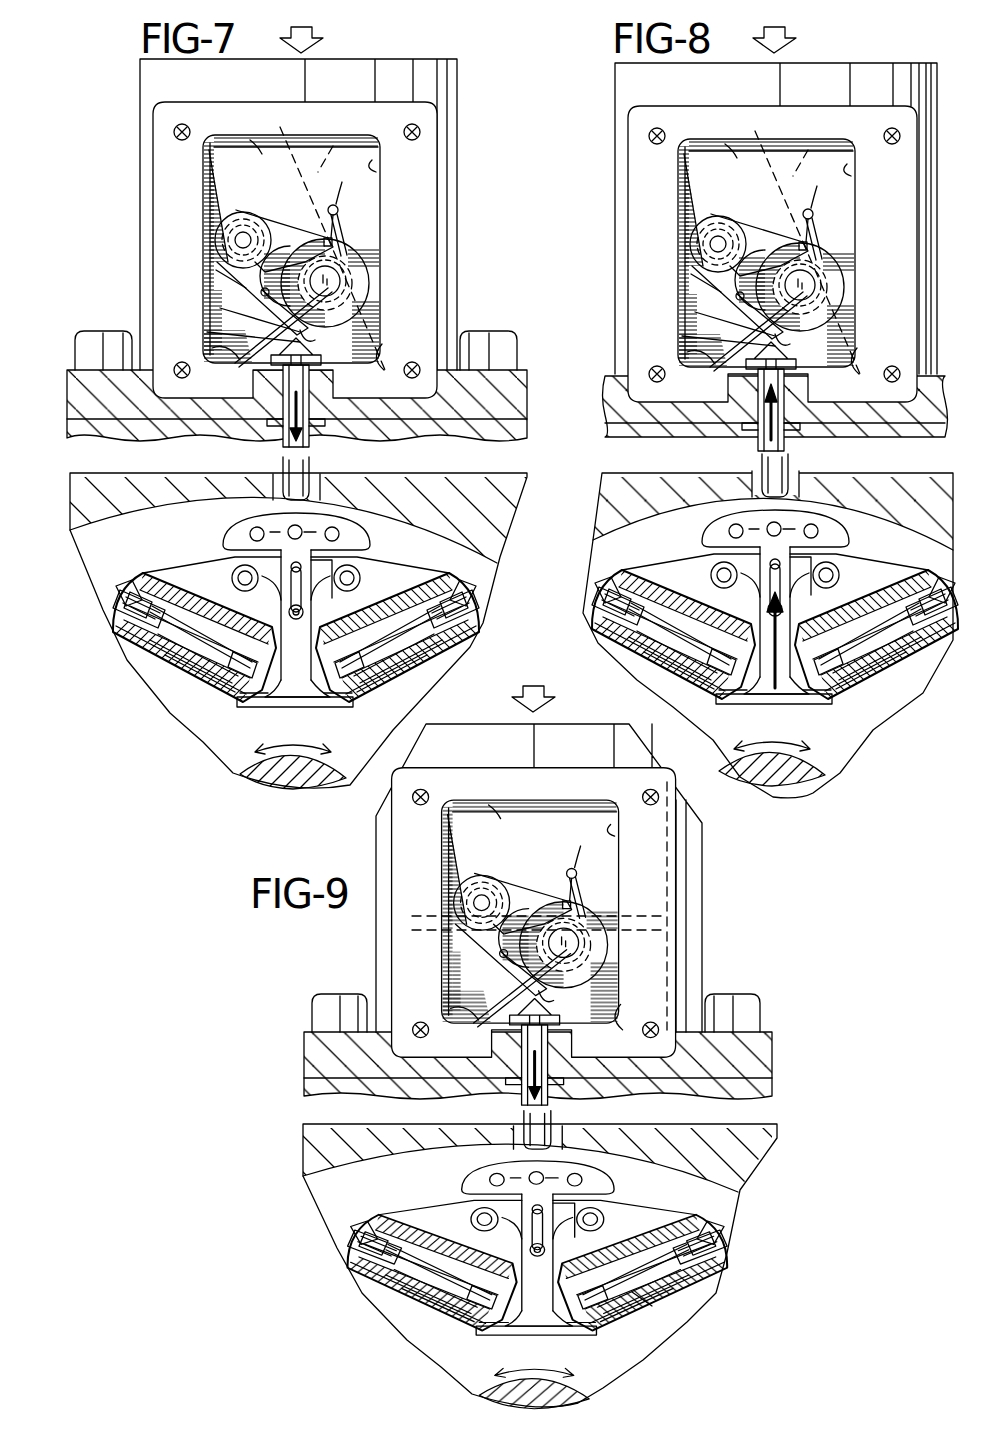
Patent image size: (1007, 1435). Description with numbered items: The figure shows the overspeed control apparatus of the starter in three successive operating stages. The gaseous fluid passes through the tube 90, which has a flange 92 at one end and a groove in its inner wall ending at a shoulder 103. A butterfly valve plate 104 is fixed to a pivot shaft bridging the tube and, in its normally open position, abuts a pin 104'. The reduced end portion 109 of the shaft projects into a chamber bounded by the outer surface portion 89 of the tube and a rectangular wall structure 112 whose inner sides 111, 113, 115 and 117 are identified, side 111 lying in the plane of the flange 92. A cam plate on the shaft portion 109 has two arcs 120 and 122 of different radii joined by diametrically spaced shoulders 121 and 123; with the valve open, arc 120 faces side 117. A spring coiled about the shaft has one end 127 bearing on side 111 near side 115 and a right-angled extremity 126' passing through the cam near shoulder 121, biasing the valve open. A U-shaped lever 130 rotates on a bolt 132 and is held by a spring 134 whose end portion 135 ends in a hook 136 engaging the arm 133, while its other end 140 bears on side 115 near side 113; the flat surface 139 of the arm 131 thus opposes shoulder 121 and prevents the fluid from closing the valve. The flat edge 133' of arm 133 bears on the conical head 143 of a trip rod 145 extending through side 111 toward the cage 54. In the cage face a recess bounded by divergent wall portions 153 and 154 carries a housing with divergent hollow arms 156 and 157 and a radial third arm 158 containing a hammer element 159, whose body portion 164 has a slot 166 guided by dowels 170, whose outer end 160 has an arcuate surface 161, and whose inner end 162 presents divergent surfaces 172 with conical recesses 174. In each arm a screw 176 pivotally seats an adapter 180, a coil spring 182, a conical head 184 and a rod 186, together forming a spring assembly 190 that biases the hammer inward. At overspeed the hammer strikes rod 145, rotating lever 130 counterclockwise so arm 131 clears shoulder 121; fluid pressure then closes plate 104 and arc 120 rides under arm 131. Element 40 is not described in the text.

In FIG. 7, the workpiece 40 is at (280, 778).
In FIG. 8, the workpiece 40 is at (818, 778).
In FIG. 9, the workpiece 40 is at (582, 1386).
In FIG. 7, the cage 54 is at (210, 761).
In FIG. 8, the cage 54 is at (872, 754).
In FIG. 9, the cage 54 is at (430, 1368).
In FIG. 7, the outer surface portion of the tube 89 is at (256, 148).
In FIG. 8, the outer surface portion of the tube 89 is at (792, 150).
In FIG. 9, the outer surface portion of the tube 89 is at (552, 812).
In FIG. 7, the tube 90 is at (130, 185).
In FIG. 8, the tube 90 is at (604, 196).
In FIG. 9, the tube 90 is at (366, 860).
In FIG. 7, the flange 92 is at (528, 390).
In FIG. 8, the flange 92 is at (606, 418).
In FIG. 9, the flange 92 is at (304, 1058).
In FIG. 9, the shoulder 103 is at (680, 900).
In FIG. 7, the butterfly valve plate 104 is at (332, 238).
In FIG. 8, the butterfly valve plate 104 is at (798, 241).
In FIG. 9, the butterfly valve plate 104 is at (703, 906).
In FIG. 7, the pin 104' is at (349, 178).
In FIG. 8, the pin 104' is at (816, 182).
In FIG. 9, the pin 104' is at (576, 844).
In FIG. 7, the end portion of the shaft 109 is at (332, 280).
In FIG. 8, the end portion of the shaft 109 is at (808, 286).
In FIG. 9, the end portion of the shaft 109 is at (578, 942).
In FIG. 7, the inner side wall surface portion 111 is at (382, 368).
In FIG. 8, the inner side wall surface portion 111 is at (830, 362).
In FIG. 9, the inner side wall surface portion 111 is at (604, 1022).
In FIG. 7, the tubular wall structure 112 is at (435, 179).
In FIG. 8, the tubular wall structure 112 is at (622, 246).
In FIG. 9, the tubular wall structure 112 is at (389, 910).
In FIG. 7, the inner side wall surface portion 113 is at (232, 128).
In FIG. 8, the inner side wall surface portion 113 is at (709, 128).
In FIG. 9, the inner side wall surface portion 113 is at (477, 787).
In FIG. 7, the inner side wall surface portion 115 is at (210, 195).
In FIG. 8, the inner side wall surface portion 115 is at (684, 197).
In FIG. 9, the inner side wall surface portion 115 is at (456, 836).
In FIG. 7, the inner side wall surface portion 117 is at (374, 166).
In FIG. 8, the inner side wall surface portion 117 is at (852, 180).
In FIG. 9, the inner side wall surface portion 117 is at (612, 840).
In FIG. 7, the arc 120 is at (360, 258).
In FIG. 8, the arc 120 is at (838, 272).
In FIG. 9, the arc 120 is at (596, 904).
In FIG. 7, the shoulder 121 is at (339, 232).
In FIG. 8, the shoulder 121 is at (788, 246).
In FIG. 9, the shoulder 121 is at (500, 970).
In FIG. 7, the arc 122 is at (262, 300).
In FIG. 8, the arc 122 is at (744, 304).
In FIG. 9, the arc 122 is at (602, 988).
In FIG. 7, the shoulder 123 is at (338, 334).
In FIG. 8, the shoulder 123 is at (817, 340).
In FIG. 9, the shoulder 123 is at (594, 968).
In FIG. 7, the right angled extremity of the spring end 126' is at (377, 231).
In FIG. 8, the right angled extremity of the spring end 126' is at (852, 239).
In FIG. 9, the right angled extremity of the spring end 126' is at (557, 881).
In FIG. 7, the end portion of the spring 127 is at (214, 358).
In FIG. 8, the end portion of the spring 127 is at (690, 362).
In FIG. 9, the end portion of the spring 127 is at (455, 1013).
In FIG. 7, the U-shaped lever 130 is at (211, 271).
In FIG. 8, the U-shaped lever 130 is at (688, 277).
In FIG. 9, the U-shaped lever 130 is at (462, 938).
In FIG. 7, the arm of the lever 131 is at (272, 226).
In FIG. 8, the arm of the lever 131 is at (740, 230).
In FIG. 9, the arm of the lever 131 is at (514, 875).
In FIG. 7, the bolt 132 is at (235, 240).
In FIG. 8, the bolt 132 is at (710, 245).
In FIG. 9, the bolt 132 is at (474, 900).
In FIG. 7, the arm of the lever 133 is at (231, 325).
In FIG. 8, the arm of the lever 133 is at (705, 329).
In FIG. 7, the flat outer side edge portion 133' is at (305, 340).
In FIG. 8, the flat outer side edge portion 133' is at (752, 331).
In FIG. 9, the flat outer side edge portion 133' is at (541, 988).
In FIG. 7, the spring 134 is at (258, 220).
In FIG. 8, the spring 134 is at (725, 222).
In FIG. 9, the spring 134 is at (494, 880).
In FIG. 7, the end portion of the spring 135 is at (214, 274).
In FIG. 8, the end portion of the spring 135 is at (690, 290).
In FIG. 7, the hook 136 is at (262, 292).
In FIG. 8, the hook 136 is at (738, 296).
In FIG. 9, the hook 136 is at (502, 953).
In FIG. 7, the flat surface 139 is at (324, 242).
In FIG. 8, the flat surface 139 is at (806, 238).
In FIG. 9, the flat surface 139 is at (572, 890).
In FIG. 7, the end of the spring 140 is at (206, 168).
In FIG. 8, the end of the spring 140 is at (680, 170).
In FIG. 9, the end of the spring 140 is at (445, 825).
In FIG. 7, the expanded head portion 143 is at (282, 372).
In FIG. 8, the expanded head portion 143 is at (750, 369).
In FIG. 9, the expanded head portion 143 is at (510, 1030).
In FIG. 7, the trip rod 145 is at (273, 459).
In FIG. 8, the trip rod 145 is at (757, 460).
In FIG. 9, the trip rod 145 is at (513, 1111).
In FIG. 7, the wall surface portion of the recess 153 is at (135, 672).
In FIG. 8, the wall surface portion of the recess 153 is at (614, 665).
In FIG. 9, the wall surface portion of the recess 153 is at (388, 1300).
In FIG. 7, the wall surface portion of the recess 154 is at (472, 642).
In FIG. 8, the wall surface portion of the recess 154 is at (930, 660).
In FIG. 9, the wall surface portion of the recess 154 is at (708, 1280).
In FIG. 7, the hollow elongated arm 156 is at (165, 575).
In FIG. 8, the hollow elongated arm 156 is at (655, 575).
In FIG. 9, the hollow elongated arm 156 is at (395, 1222).
In FIG. 7, the hollow elongated arm 157 is at (432, 580).
In FIG. 8, the hollow elongated arm 157 is at (912, 578).
In FIG. 9, the hollow elongated arm 157 is at (696, 1228).
In FIG. 7, the third hollow arm 158 is at (335, 588).
In FIG. 8, the third hollow arm 158 is at (816, 588).
In FIG. 9, the third hollow arm 158 is at (582, 1224).
In FIG. 7, the hammer element 159 is at (369, 506).
In FIG. 8, the hammer element 159 is at (849, 506).
In FIG. 9, the hammer element 159 is at (627, 1154).
In FIG. 7, the end portion of the hammer 160 is at (248, 530).
In FIG. 8, the end portion of the hammer 160 is at (726, 530).
In FIG. 9, the end portion of the hammer 160 is at (497, 1168).
In FIG. 7, the outermost surface of the hammer head 161 is at (333, 495).
In FIG. 8, the outermost surface of the hammer head 161 is at (810, 495).
In FIG. 9, the outermost surface of the hammer head 161 is at (578, 1140).
In FIG. 7, the end portion of the hammer 162 is at (308, 692).
In FIG. 8, the end portion of the hammer 162 is at (790, 692).
In FIG. 9, the end portion of the hammer 162 is at (555, 1338).
In FIG. 7, the body portion of the hammer 164 is at (234, 582).
In FIG. 8, the body portion of the hammer 164 is at (716, 582).
In FIG. 9, the body portion of the hammer 164 is at (490, 1222).
In FIG. 7, the elongate slot 166 is at (362, 576).
In FIG. 8, the elongate slot 166 is at (840, 574).
In FIG. 9, the elongate slot 166 is at (603, 1206).
In FIG. 7, the dowels 170 is at (289, 566).
In FIG. 8, the dowels 170 is at (768, 564).
In FIG. 9, the dowels 170 is at (530, 1184).
In FIG. 7, the surface 172 is at (284, 640).
In FIG. 7, the conically shaped recess 174 is at (276, 707).
In FIG. 8, the conically shaped recess 174 is at (748, 705).
In FIG. 9, the conically shaped recess 174 is at (524, 1340).
In FIG. 7, the screw 176 is at (136, 585).
In FIG. 8, the screw 176 is at (625, 585).
In FIG. 9, the screw 176 is at (374, 1240).
In FIG. 7, the adapter 180 is at (122, 645).
In FIG. 8, the adapter 180 is at (602, 644).
In FIG. 9, the adapter 180 is at (424, 1230).
In FIG. 7, the coil spring 182 is at (172, 665).
In FIG. 8, the coil spring 182 is at (635, 668).
In FIG. 9, the coil spring 182 is at (398, 1312).
In FIG. 7, the conical element 184 is at (245, 703).
In FIG. 8, the conical element 184 is at (700, 702).
In FIG. 9, the conical element 184 is at (500, 1345).
In FIG. 7, the rod 186 is at (210, 675).
In FIG. 8, the rod 186 is at (672, 675).
In FIG. 9, the rod 186 is at (422, 1322).
In FIG. 9, the spring assembly 190 is at (654, 1307).